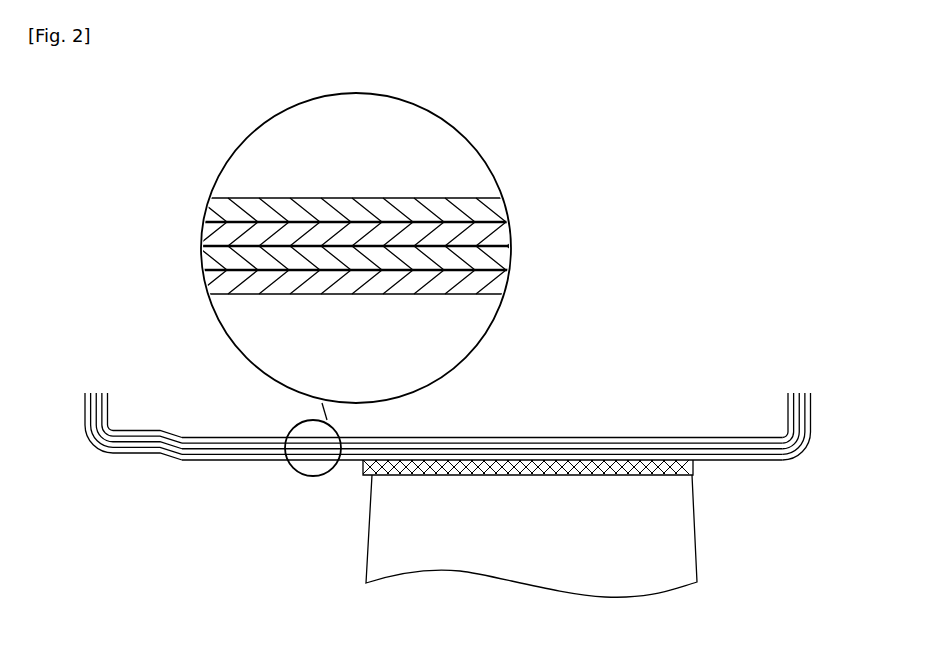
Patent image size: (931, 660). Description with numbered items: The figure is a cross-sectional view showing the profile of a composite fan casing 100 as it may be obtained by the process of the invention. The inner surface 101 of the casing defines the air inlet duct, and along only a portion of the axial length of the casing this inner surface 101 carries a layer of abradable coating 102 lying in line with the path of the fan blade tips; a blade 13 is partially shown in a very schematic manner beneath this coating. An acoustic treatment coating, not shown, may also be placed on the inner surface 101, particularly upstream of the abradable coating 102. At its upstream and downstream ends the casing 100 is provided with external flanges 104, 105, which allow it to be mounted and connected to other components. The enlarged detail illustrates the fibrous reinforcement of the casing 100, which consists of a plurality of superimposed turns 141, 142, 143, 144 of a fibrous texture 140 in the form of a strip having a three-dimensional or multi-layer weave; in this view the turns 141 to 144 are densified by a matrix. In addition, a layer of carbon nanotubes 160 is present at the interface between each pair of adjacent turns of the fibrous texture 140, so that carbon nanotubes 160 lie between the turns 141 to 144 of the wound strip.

The blade 13 is at (684, 537).
The composite fan casing 100 is at (456, 410).
The inner surface 101 is at (274, 461).
The abradable coating 102 is at (548, 468).
The external flange 104 is at (85, 405).
The external flange 105 is at (813, 412).
The fibrous texture 140 is at (374, 211).
The turn 141 is at (218, 283).
The turn 142 is at (218, 258).
The turn 143 is at (218, 237).
The turn 144 is at (220, 210).
The layer of carbon nanotubes 160 is at (511, 270).